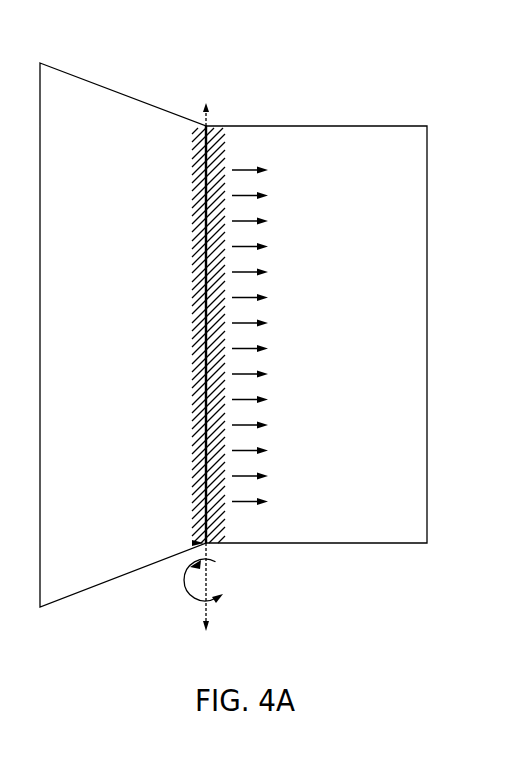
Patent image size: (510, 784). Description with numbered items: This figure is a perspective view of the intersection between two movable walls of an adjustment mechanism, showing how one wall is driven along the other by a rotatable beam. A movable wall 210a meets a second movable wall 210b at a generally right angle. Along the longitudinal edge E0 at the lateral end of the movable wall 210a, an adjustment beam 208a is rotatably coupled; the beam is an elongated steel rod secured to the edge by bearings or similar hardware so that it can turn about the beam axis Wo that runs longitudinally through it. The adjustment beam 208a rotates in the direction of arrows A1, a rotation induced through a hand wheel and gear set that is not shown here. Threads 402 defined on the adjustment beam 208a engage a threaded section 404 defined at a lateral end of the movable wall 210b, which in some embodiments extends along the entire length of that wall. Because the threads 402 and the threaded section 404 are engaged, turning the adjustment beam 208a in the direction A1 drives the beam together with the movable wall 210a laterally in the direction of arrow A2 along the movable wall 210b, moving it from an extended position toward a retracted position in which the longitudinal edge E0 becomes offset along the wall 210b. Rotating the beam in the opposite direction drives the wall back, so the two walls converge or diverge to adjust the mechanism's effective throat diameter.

The movable wall 210a is at (87, 80).
The movable wall 210b is at (405, 126).
The adjustment beam 208a is at (204, 125).
The threads 402 is at (200, 503).
The threaded section 404 is at (222, 516).
The arrow A2 is at (242, 168).
The arrows A1 is at (227, 579).
The longitudinal edge E0 is at (198, 544).
The beam axis Wo is at (203, 611).